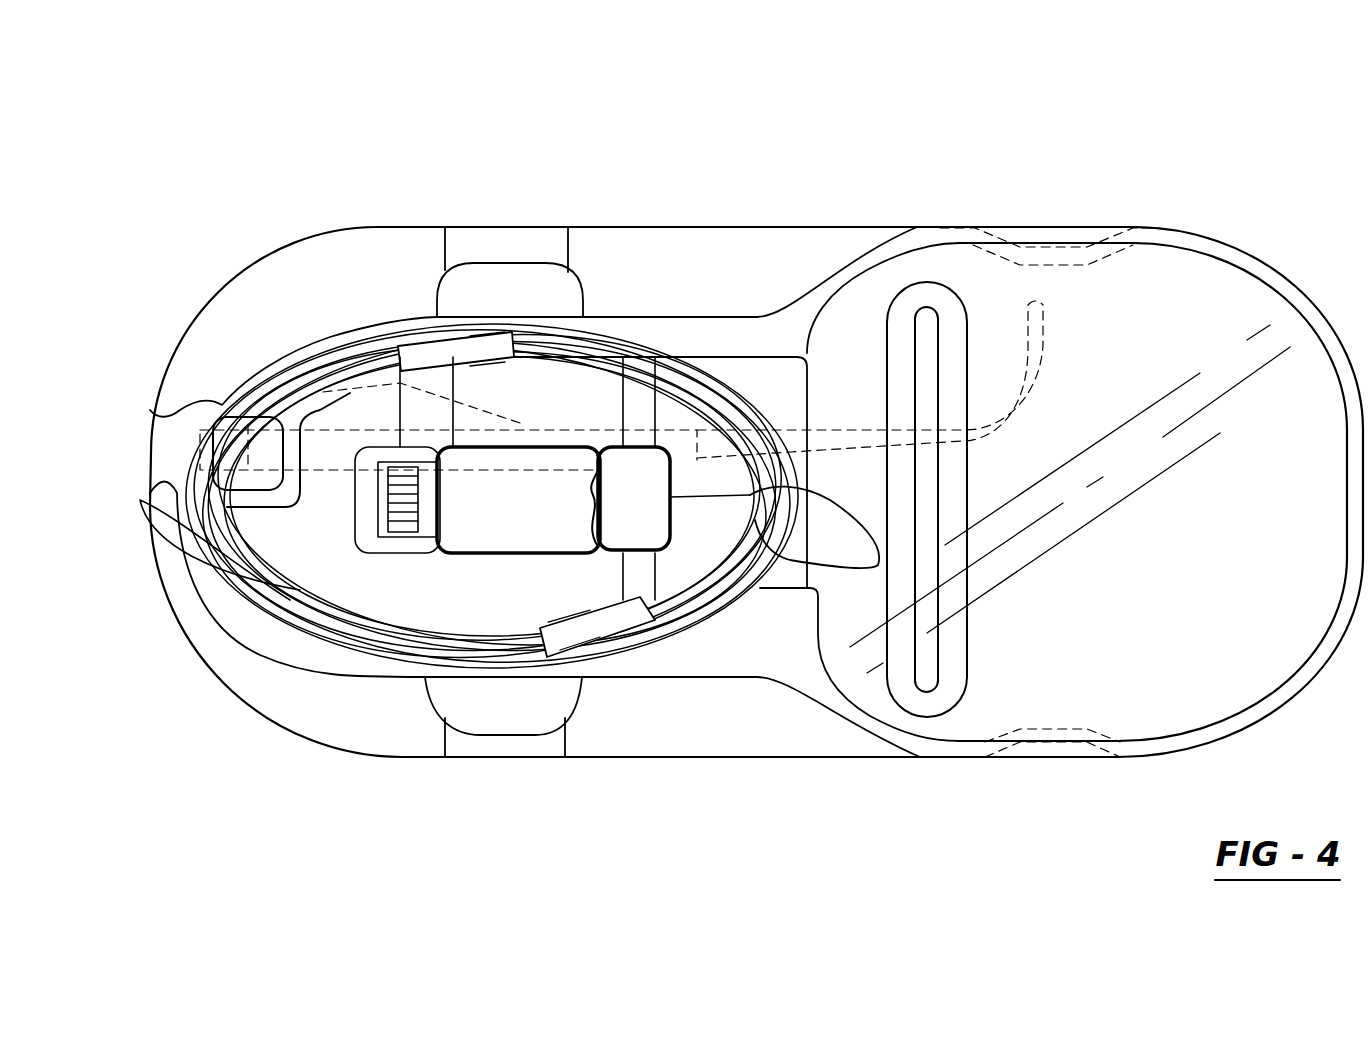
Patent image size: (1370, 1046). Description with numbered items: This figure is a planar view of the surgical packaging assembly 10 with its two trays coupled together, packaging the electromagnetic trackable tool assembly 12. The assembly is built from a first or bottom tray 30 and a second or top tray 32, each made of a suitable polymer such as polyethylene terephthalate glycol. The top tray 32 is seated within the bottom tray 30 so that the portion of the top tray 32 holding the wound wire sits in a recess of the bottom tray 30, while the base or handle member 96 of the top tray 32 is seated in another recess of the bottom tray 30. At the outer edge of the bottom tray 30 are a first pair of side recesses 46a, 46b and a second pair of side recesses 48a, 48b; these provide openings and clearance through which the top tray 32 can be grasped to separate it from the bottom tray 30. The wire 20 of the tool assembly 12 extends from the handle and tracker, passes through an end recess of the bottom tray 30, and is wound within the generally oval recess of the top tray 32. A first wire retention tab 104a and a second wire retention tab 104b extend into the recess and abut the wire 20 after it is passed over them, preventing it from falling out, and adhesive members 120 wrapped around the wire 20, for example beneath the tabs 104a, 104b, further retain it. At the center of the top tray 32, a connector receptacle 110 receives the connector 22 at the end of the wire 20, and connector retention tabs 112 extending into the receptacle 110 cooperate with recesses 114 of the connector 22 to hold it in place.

The surgical packaging assembly 10 is at (567, 140).
The tool assembly 12 is at (847, 432).
The wire 20 is at (353, 357).
The connector 22 is at (537, 510).
The bottom tray 30 is at (613, 265).
The top tray 32 is at (793, 332).
The side recess 46a is at (458, 235).
The side recess 46b is at (477, 755).
The side recess 48a is at (1048, 265).
The side recess 48b is at (1058, 752).
The handle member 96 is at (1012, 305).
The first wire retention tab 104a is at (440, 335).
The second wire retention tab 104b is at (581, 660).
The connector receptacle 110 is at (403, 543).
The connector retention tabs 112 is at (600, 455).
The recesses of the connector 114 is at (612, 498).
The adhesive members 120 is at (480, 343).